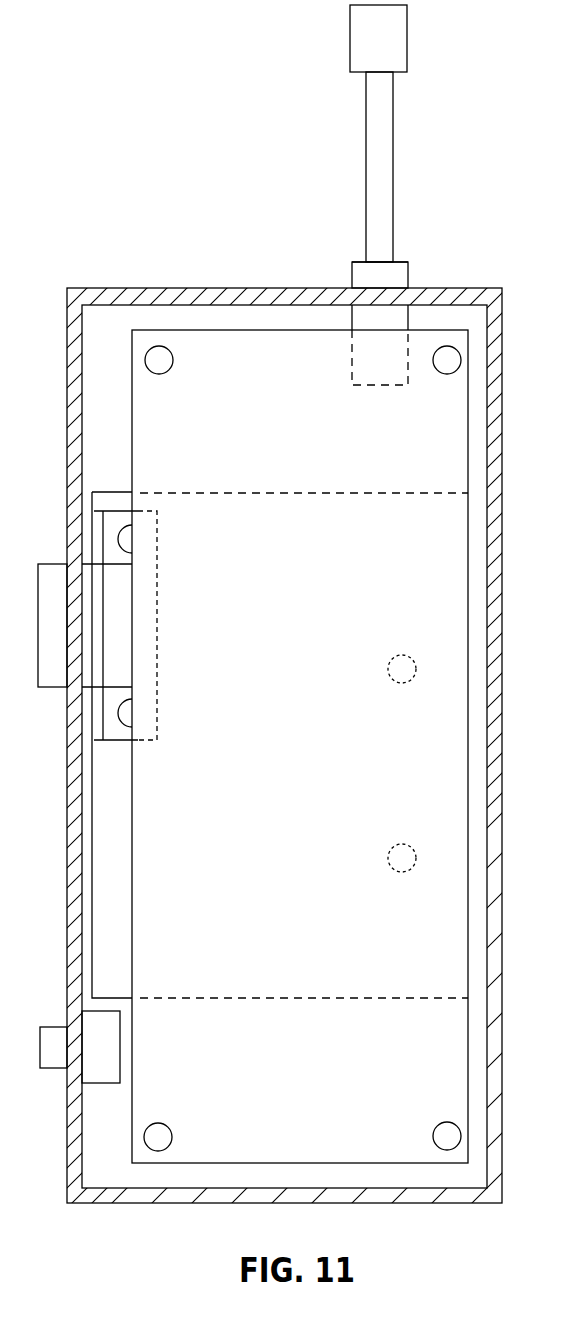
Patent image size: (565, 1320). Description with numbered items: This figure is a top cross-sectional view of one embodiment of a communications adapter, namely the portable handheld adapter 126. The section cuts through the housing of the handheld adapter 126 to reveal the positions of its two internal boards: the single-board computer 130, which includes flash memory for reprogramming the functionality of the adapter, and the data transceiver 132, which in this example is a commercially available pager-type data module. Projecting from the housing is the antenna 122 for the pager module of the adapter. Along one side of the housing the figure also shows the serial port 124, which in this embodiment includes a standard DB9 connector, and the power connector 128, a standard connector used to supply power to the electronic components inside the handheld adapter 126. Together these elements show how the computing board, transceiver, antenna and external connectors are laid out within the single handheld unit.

The antenna 122 is at (375, 140).
The serial port 124 is at (55, 590).
The handheld adapter 126 is at (427, 201).
The power connector 128 is at (55, 1050).
The single-board computer 130 is at (438, 490).
The data transceiver 132 is at (148, 329).